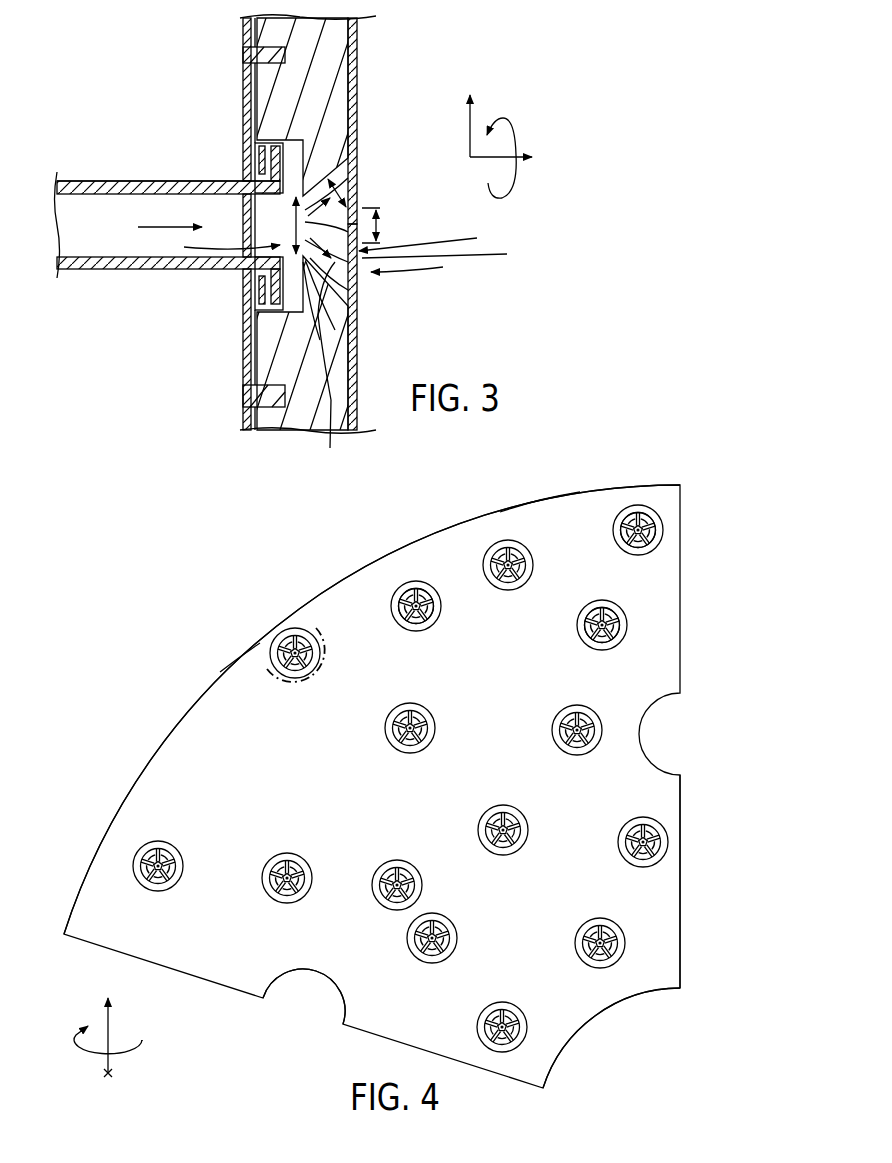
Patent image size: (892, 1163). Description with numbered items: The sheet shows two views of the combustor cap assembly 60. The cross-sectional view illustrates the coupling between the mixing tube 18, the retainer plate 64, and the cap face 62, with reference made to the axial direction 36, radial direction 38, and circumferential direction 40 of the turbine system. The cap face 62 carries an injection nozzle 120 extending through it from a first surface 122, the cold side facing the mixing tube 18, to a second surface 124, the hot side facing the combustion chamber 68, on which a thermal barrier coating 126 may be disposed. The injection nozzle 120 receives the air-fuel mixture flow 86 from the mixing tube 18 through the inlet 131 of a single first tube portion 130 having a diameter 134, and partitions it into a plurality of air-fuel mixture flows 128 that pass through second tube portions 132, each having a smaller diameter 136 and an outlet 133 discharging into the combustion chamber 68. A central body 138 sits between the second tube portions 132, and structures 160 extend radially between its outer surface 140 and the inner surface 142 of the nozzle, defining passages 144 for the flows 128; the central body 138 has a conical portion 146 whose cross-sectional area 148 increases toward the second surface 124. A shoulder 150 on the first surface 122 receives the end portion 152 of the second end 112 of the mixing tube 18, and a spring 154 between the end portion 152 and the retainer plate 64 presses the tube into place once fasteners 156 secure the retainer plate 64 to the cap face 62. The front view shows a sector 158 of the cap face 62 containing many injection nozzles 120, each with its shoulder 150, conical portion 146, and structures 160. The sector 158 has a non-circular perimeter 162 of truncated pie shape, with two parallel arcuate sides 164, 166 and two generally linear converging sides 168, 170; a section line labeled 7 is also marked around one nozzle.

In FIG. 3, the combustor cap assembly 60 is at (150, 72).
In FIG. 3, the fasteners 156 is at (242, 48).
In FIG. 3, the retainer plate 64 is at (243, 65).
In FIG. 3, the shoulder 150 is at (290, 143).
In FIG. 4, the shoulder 150 is at (640, 507).
In FIG. 3, the second end 112 is at (200, 182).
In FIG. 3, the mixing tube 18 is at (138, 182).
In FIG. 3, the air-fuel mixture flows 128 is at (308, 205).
In FIG. 3, the air-fuel mixture flow 86 is at (167, 227).
In FIG. 3, the first tube portion 130 is at (292, 195).
In FIG. 3, the diameter 134 is at (288, 220).
In FIG. 3, the inlet 131 is at (218, 245).
In FIG. 4, the inlet 131 is at (593, 737).
In FIG. 3, the end portion 152 is at (275, 288).
In FIG. 3, the spring 154 is at (247, 327).
In FIG. 3, the first surface 122 is at (255, 365).
In FIG. 4, the first surface 122 is at (662, 790).
In FIG. 3, the cap face 62 is at (358, 33).
In FIG. 4, the cap face 62 is at (238, 656).
In FIG. 3, the thermal barrier coating 126 is at (358, 100).
In FIG. 3, the second tube portions 132 is at (337, 170).
In FIG. 3, the combustion chamber 68 is at (418, 175).
In FIG. 3, the diameter 136 is at (348, 190).
In FIG. 3, the cross-sectional area 148 is at (378, 226).
In FIG. 3, the outer surface 140 is at (434, 238).
In FIG. 3, the injection nozzle 120 is at (451, 257).
In FIG. 4, the injection nozzle 120 is at (653, 513).
In FIG. 3, the outlet 133 is at (424, 266).
In FIG. 3, the central body 138 is at (335, 250).
In FIG. 3, the inner surface 142 is at (330, 270).
In FIG. 3, the conical portion 146 is at (310, 290).
In FIG. 4, the conical portion 146 is at (422, 592).
In FIG. 3, the second surface 124 is at (358, 352).
In FIG. 3, the passages 144 is at (331, 367).
In FIG. 3, the radial direction 38 is at (473, 118).
In FIG. 4, the radial direction 38 is at (110, 1032).
In FIG. 3, the circumferential direction 40 is at (508, 133).
In FIG. 4, the circumferential direction 40 is at (88, 1052).
In FIG. 3, the axial direction 36 is at (520, 168).
In FIG. 4, the axial direction 36 is at (112, 1070).
In FIG. 4, the perimeter 162 is at (522, 505).
In FIG. 4, the arcuate side 164 is at (552, 498).
In FIG. 4, the structures 160 is at (407, 600).
In FIG. 4, the sector 158 is at (323, 593).
In FIG. 4, the converging side 170 is at (682, 660).
In FIG. 4, the arcuate side 166 is at (598, 1017).
In FIG. 4, the converging side 168 is at (358, 1025).
In FIG. 4, the section line 7- 7 is at (320, 633).